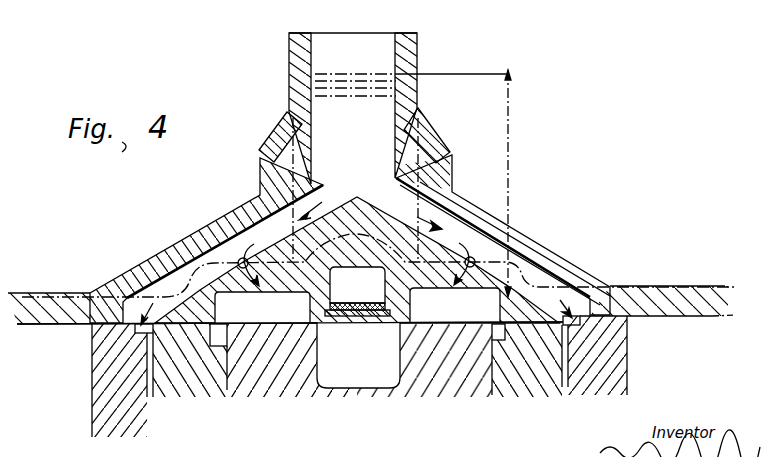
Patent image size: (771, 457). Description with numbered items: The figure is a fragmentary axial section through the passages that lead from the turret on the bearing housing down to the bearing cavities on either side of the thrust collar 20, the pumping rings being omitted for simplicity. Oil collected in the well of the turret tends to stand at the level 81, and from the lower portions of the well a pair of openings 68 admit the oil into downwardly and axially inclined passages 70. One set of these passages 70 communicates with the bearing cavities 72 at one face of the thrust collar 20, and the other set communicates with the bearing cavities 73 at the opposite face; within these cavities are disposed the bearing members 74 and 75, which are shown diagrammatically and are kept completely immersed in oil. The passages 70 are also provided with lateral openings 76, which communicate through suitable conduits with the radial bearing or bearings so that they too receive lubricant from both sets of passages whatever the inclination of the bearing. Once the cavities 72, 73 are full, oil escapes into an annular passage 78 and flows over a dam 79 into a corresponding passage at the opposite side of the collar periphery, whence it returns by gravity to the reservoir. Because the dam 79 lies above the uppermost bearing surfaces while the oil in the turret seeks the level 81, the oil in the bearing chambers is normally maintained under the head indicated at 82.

The thrust collar 20 is at (434, 372).
The openings 68 is at (367, 193).
The inclined passages 70 is at (258, 232).
The bearing cavities 72 is at (188, 326).
The bearing cavities 73 is at (537, 318).
The bearing members 74 is at (97, 387).
The bearing members 75 is at (608, 369).
The lateral openings 76 is at (236, 258).
The annular passage 78 is at (390, 290).
The dam 79 is at (354, 300).
The oil level 81 is at (362, 73).
The head 82 is at (509, 173).